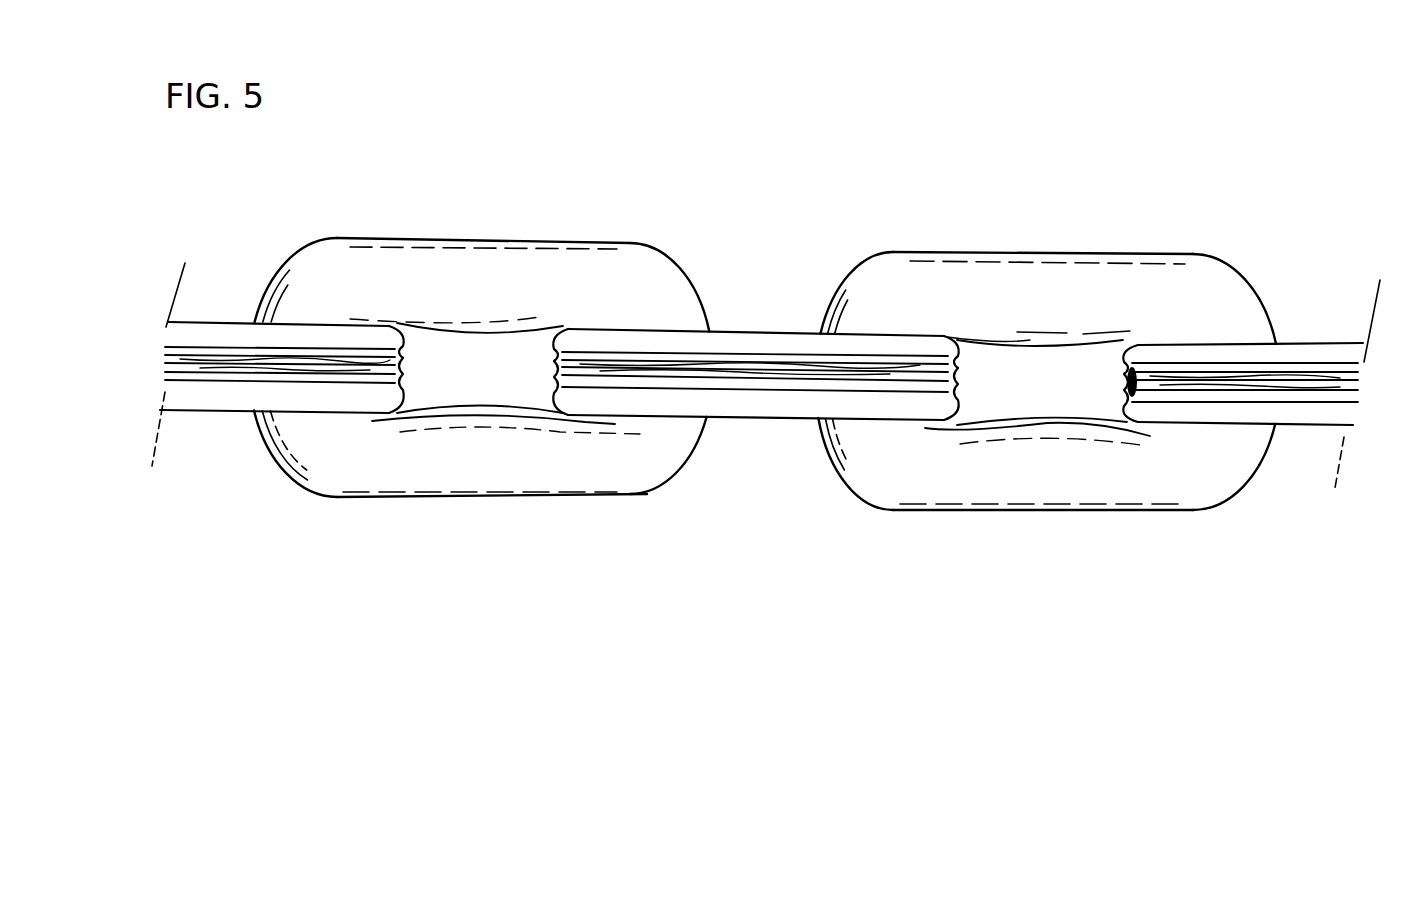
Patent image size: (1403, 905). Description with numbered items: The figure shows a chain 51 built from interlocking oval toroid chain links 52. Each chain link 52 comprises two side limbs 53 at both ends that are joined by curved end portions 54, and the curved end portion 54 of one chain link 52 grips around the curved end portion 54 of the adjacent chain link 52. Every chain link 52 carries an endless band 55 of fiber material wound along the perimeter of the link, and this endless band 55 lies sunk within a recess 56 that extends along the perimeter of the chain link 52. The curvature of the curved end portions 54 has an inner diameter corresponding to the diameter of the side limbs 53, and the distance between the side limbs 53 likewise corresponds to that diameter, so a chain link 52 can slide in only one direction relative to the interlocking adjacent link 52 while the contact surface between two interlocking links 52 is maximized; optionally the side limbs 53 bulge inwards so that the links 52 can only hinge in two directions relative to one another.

The chain 51 is at (748, 155).
The chain link 52 is at (757, 405).
The side limb 53 is at (1052, 447).
The curved end portion 54 is at (852, 310).
The endless band 55 is at (218, 367).
The recess 56 is at (538, 383).